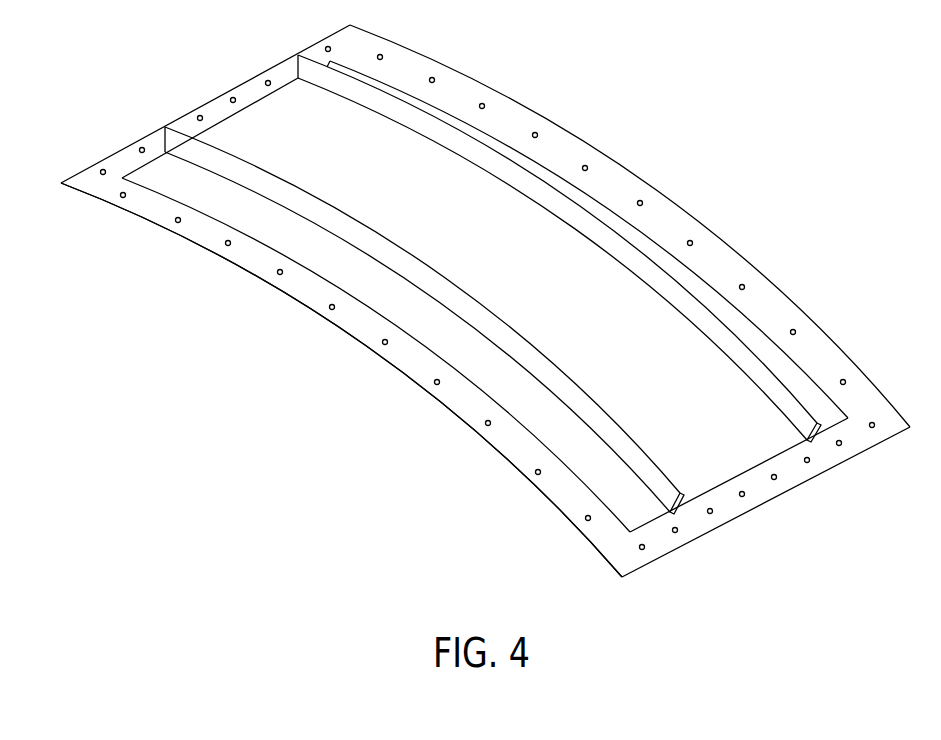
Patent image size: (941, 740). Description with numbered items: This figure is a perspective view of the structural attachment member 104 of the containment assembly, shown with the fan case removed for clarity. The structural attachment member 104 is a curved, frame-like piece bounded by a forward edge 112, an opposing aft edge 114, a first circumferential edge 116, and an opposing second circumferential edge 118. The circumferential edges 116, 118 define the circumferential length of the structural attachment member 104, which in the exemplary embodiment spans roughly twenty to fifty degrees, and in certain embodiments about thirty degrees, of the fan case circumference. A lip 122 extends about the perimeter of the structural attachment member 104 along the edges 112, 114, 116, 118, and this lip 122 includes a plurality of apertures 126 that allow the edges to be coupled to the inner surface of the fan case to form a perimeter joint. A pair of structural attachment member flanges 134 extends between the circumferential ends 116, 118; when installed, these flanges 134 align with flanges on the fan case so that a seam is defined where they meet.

The structural attachment member 104 is at (737, 117).
The forward edge 112 is at (513, 447).
The aft edge 114 is at (690, 212).
The first circumferential edge 116 is at (218, 108).
The second circumferential edge 118 is at (750, 503).
The lip 122 is at (467, 405).
The apertures 126 is at (745, 287).
The structural attachment member flanges 134 is at (540, 185).